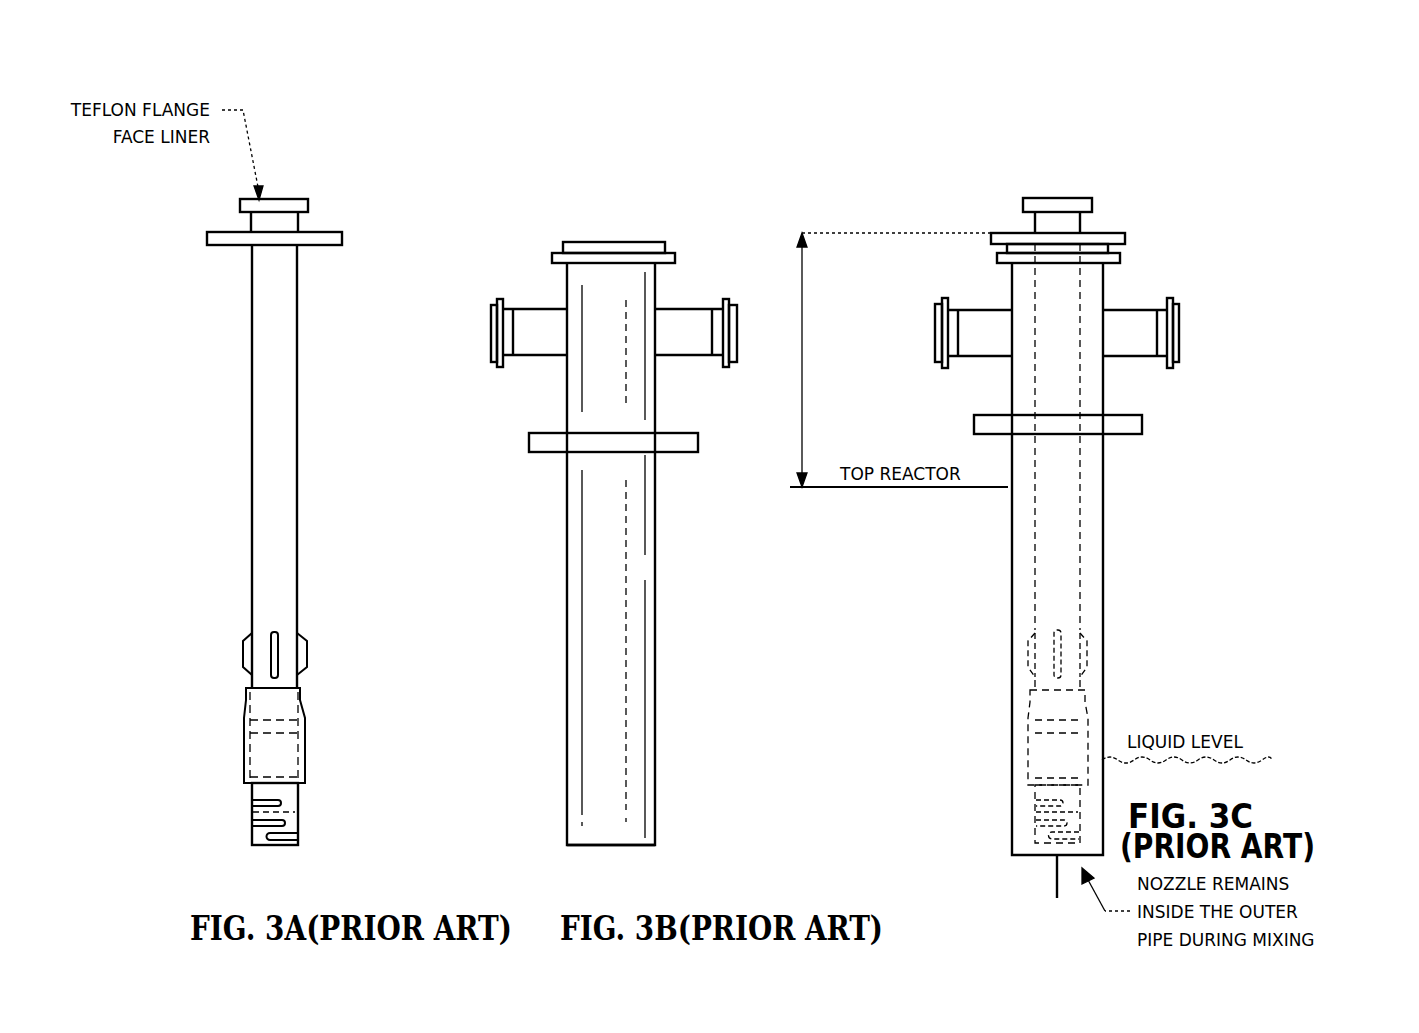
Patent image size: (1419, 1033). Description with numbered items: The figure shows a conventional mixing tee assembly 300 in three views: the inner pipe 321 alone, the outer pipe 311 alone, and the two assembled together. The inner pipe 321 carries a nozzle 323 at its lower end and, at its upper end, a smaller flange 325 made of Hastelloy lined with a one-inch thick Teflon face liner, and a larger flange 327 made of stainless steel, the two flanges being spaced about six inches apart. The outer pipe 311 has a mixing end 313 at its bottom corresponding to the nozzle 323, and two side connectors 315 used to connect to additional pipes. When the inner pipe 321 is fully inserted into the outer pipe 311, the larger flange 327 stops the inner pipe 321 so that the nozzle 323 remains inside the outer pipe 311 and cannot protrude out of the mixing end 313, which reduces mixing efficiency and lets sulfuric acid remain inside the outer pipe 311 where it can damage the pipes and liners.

In FIG. 3C, the mixing tee assembly 300 is at (946, 131).
In FIG. 3B, the outer pipe 311 is at (645, 566).
In FIG. 3C, the outer pipe 311 is at (1104, 490).
In FIG. 3B, the mixing end 313 is at (635, 848).
In FIG. 3B, the side connectors 315 is at (489, 335).
In FIG. 3A, the inner pipe 321 is at (257, 465).
In FIG. 3C, the inner pipe 321 is at (1081, 388).
In FIG. 3A, the nozzle 323 is at (289, 800).
In FIG. 3C, the nozzle 323 is at (1035, 790).
In FIG. 3A, the smaller flange 325 is at (290, 200).
In FIG. 3A, the larger flange 327 is at (328, 233).
In FIG. 3C, the larger flange 327 is at (1126, 234).